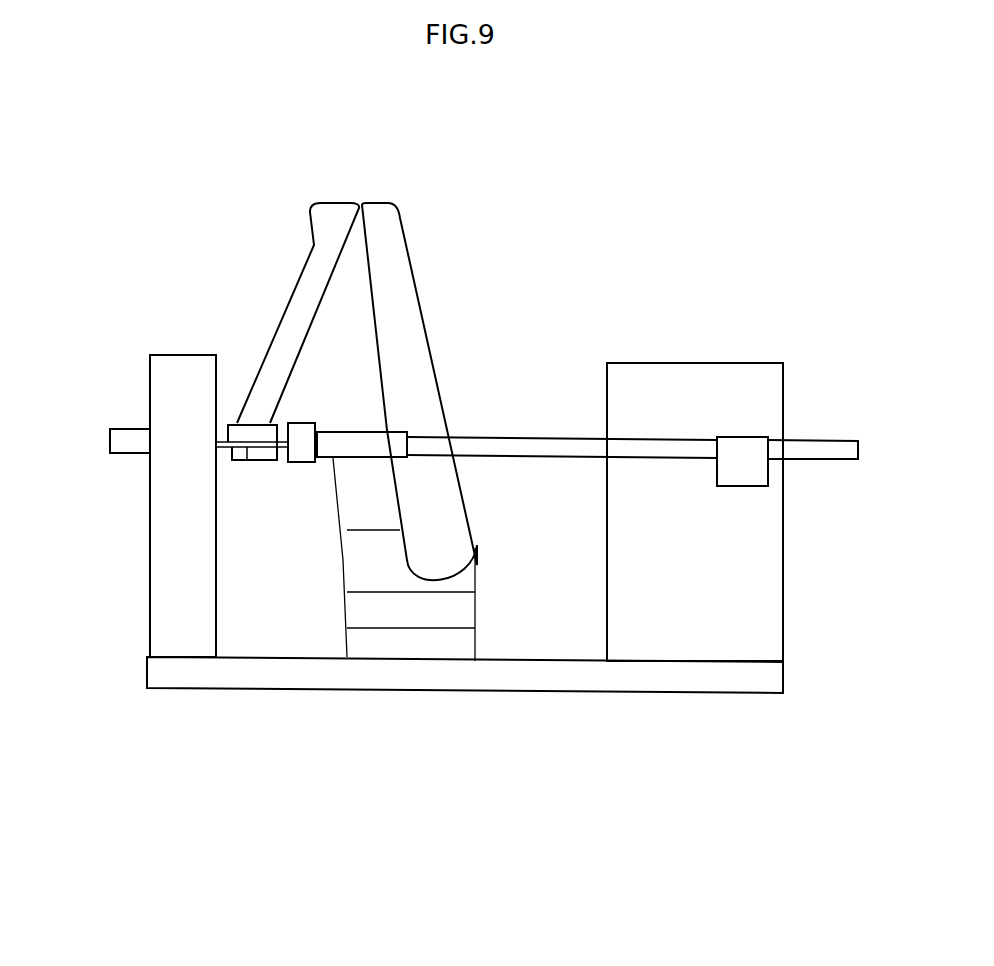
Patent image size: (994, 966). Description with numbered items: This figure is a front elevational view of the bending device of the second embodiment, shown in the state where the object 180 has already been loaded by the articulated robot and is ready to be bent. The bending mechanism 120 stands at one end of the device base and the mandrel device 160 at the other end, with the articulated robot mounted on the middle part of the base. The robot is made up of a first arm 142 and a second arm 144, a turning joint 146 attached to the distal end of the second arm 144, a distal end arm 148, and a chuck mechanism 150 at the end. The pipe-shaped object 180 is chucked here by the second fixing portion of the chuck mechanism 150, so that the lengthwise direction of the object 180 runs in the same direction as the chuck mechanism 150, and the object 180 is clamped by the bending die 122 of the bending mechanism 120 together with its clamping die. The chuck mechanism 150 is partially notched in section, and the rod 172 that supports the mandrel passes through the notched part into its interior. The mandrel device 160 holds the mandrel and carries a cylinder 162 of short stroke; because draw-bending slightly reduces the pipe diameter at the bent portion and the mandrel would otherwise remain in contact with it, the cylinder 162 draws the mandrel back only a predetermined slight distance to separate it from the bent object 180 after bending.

The bending mechanism 120 is at (703, 363).
The bending die 122 is at (757, 472).
The first arm 142 is at (390, 292).
The second arm 144 is at (305, 300).
The turning joint 146 is at (265, 462).
The distal end arm 148 is at (303, 455).
The chuck mechanism 150 is at (360, 450).
The mandrel device 160 is at (181, 355).
The cylinder 162 is at (125, 447).
The rod 172 is at (247, 462).
The object 180 is at (822, 440).